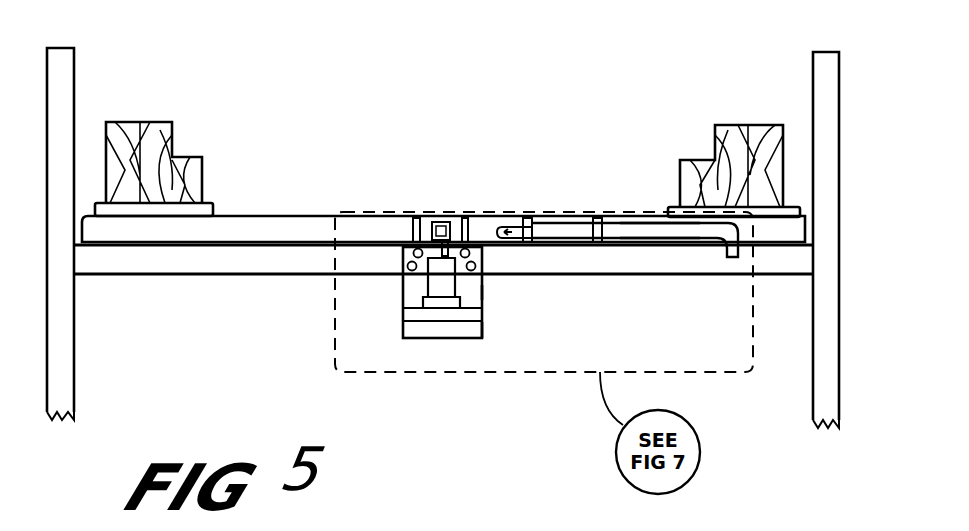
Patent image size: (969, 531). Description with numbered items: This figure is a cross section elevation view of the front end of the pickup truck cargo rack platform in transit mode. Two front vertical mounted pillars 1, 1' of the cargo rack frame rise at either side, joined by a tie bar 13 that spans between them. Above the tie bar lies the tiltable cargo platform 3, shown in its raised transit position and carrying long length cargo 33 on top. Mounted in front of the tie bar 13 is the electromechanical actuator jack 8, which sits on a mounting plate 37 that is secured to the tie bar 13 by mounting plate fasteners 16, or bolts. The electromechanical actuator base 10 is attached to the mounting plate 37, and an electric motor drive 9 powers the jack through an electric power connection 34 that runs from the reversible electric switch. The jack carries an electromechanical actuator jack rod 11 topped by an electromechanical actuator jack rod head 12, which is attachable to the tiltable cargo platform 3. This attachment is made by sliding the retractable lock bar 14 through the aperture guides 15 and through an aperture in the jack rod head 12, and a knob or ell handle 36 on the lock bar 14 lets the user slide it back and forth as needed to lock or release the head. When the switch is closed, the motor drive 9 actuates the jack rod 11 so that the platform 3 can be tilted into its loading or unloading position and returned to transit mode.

The front vertical mounted pillar 1 is at (810, 223).
The front vertical mounted pillar 1' is at (76, 216).
The tiltable cargo platform 3 is at (214, 204).
The electromechanical actuator jack 8 is at (436, 286).
The electric motor drive 9 is at (423, 299).
The electromechanical actuator base 10 is at (448, 315).
The electromechanical actuator jack rod 11 is at (440, 240).
The electromechanical actuator jack rod head 12 is at (437, 224).
The tie bar 13 is at (157, 258).
The retractable lock bar 14 is at (663, 232).
The aperture guides 15 is at (413, 232).
The mounting plate fasteners 16 is at (414, 253).
The long length cargo 33 is at (176, 136).
The electric power connection 34 is at (531, 323).
The knob or ell handle 36 is at (740, 258).
The mounting plate 37 is at (487, 288).